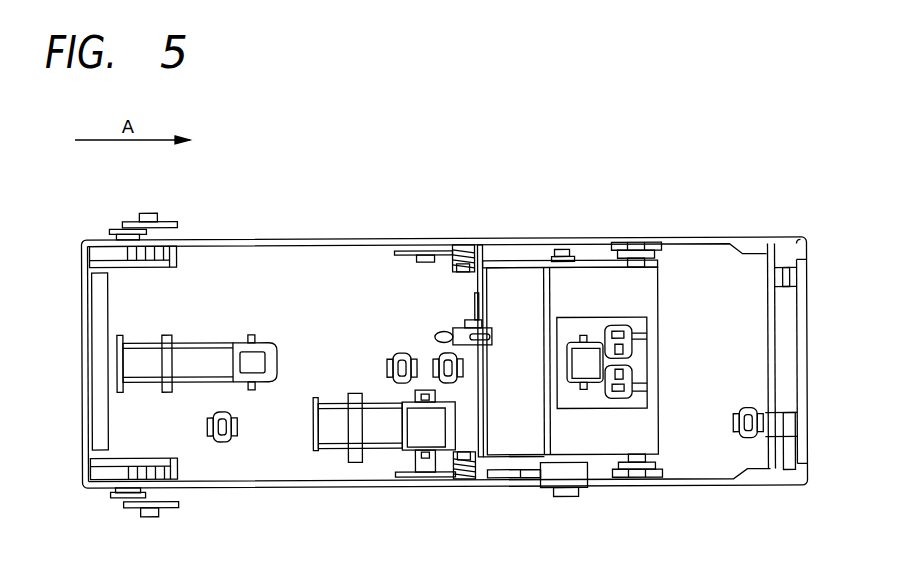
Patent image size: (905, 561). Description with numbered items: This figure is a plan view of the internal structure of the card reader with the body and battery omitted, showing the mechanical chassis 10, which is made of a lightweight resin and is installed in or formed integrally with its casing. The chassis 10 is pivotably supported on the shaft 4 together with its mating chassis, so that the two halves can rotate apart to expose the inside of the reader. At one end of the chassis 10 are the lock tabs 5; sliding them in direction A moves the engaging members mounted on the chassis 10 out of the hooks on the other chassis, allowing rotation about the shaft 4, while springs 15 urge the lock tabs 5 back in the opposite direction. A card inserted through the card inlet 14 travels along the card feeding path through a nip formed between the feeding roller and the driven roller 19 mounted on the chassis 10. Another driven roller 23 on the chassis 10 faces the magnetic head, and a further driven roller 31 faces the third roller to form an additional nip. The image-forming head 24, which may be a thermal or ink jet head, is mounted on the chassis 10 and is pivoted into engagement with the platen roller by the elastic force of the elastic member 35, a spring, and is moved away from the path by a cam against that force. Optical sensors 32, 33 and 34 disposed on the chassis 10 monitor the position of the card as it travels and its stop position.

The shaft 4 is at (770, 237).
The lock tabs 5 is at (150, 212).
The mechanical chassis 10 is at (497, 239).
The card inlet 14 is at (82, 355).
The springs 15 is at (172, 247).
The driven roller 19 is at (243, 362).
The driven roller 23 is at (437, 437).
The image-forming head 24 is at (512, 437).
The driven roller / optical sensor 31 is at (583, 338).
The optical sensor 32 is at (398, 352).
The optical sensor 33 is at (447, 330).
The optical sensor 34 is at (752, 440).
The elastic member 35 is at (461, 245).